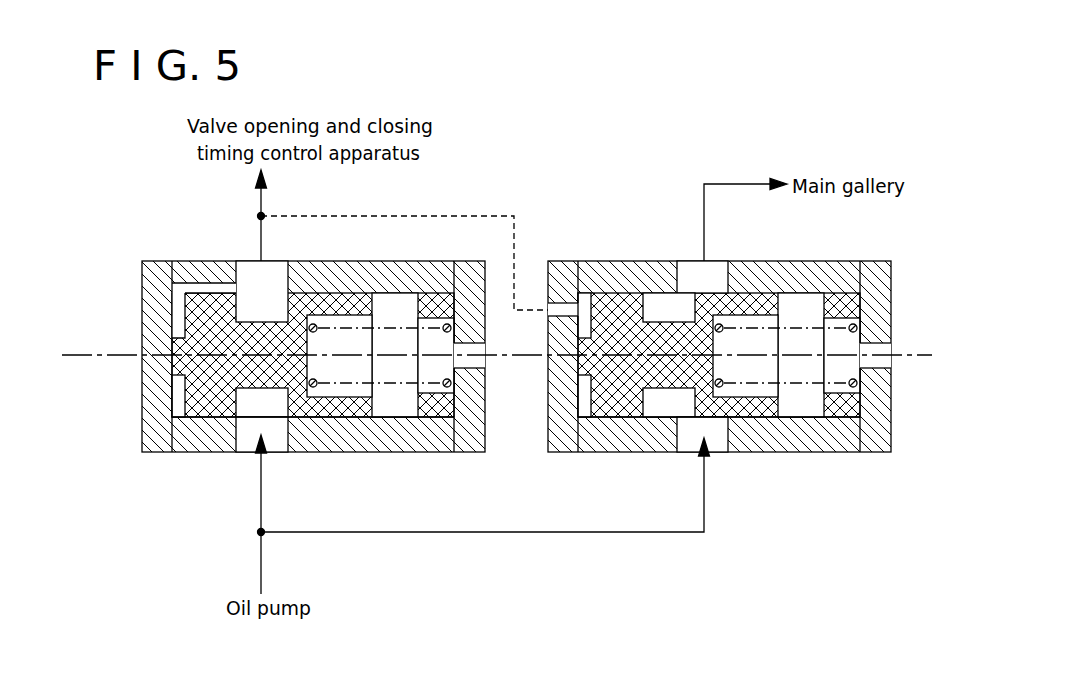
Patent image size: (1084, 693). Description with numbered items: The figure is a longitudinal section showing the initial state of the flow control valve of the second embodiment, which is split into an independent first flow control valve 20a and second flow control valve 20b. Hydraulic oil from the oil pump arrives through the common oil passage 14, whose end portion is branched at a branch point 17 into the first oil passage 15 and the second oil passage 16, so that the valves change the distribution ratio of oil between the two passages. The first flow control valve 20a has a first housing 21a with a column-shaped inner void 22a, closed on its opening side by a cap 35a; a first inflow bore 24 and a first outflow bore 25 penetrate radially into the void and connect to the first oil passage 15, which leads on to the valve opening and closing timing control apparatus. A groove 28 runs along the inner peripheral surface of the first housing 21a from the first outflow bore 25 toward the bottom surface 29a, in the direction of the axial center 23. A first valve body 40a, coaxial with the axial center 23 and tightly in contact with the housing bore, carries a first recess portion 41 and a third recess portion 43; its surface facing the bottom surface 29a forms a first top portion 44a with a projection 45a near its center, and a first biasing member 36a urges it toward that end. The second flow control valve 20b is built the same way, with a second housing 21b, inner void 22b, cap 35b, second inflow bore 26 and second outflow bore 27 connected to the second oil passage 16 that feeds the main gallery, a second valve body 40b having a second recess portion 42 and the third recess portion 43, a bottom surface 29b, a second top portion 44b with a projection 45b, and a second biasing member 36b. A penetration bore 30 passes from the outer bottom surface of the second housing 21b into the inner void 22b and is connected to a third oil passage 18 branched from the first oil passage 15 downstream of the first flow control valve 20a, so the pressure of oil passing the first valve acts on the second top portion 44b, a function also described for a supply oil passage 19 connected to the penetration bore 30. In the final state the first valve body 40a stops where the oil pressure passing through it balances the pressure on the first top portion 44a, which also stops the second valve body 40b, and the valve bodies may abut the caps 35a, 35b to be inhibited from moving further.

The common oil passage 14 is at (262, 565).
The first oil passage 15 is at (262, 498).
The second oil passage 16 is at (535, 534).
The branch point 17 is at (258, 535).
The third oil passage 18 is at (490, 210).
The supply oil passage 19 is at (198, 262).
The first flow control valve 20a is at (295, 336).
The second flow control valve 20b is at (717, 344).
The first housing 21a is at (355, 455).
The second housing 21b is at (792, 460).
The inner void 22a is at (405, 300).
The inner void 22b is at (815, 300).
The axial center 23 is at (140, 360).
The first inflow bore 24 is at (250, 440).
The first outflow bore 25 is at (250, 264).
The second inflow bore 26 is at (718, 442).
The second outflow bore 27 is at (690, 265).
The groove 28 is at (178, 290).
The bottom surface 29a is at (190, 418).
The bottom surface 29b is at (590, 418).
The penetration bore 30 is at (560, 315).
The cap 35a is at (468, 453).
The cap 35b is at (895, 275).
The first biasing member 36a is at (398, 420).
The second biasing member 36b is at (818, 435).
The first valve body 40a is at (200, 420).
The second valve body 40b is at (620, 425).
The first recess portion 41 is at (270, 412).
The second recess portion 42 is at (662, 430).
The third recess portion 43 is at (340, 325).
The first top portion 44a is at (180, 315).
The second top portion 44b is at (580, 405).
The projection 45a is at (185, 350).
The projection 45b is at (585, 365).